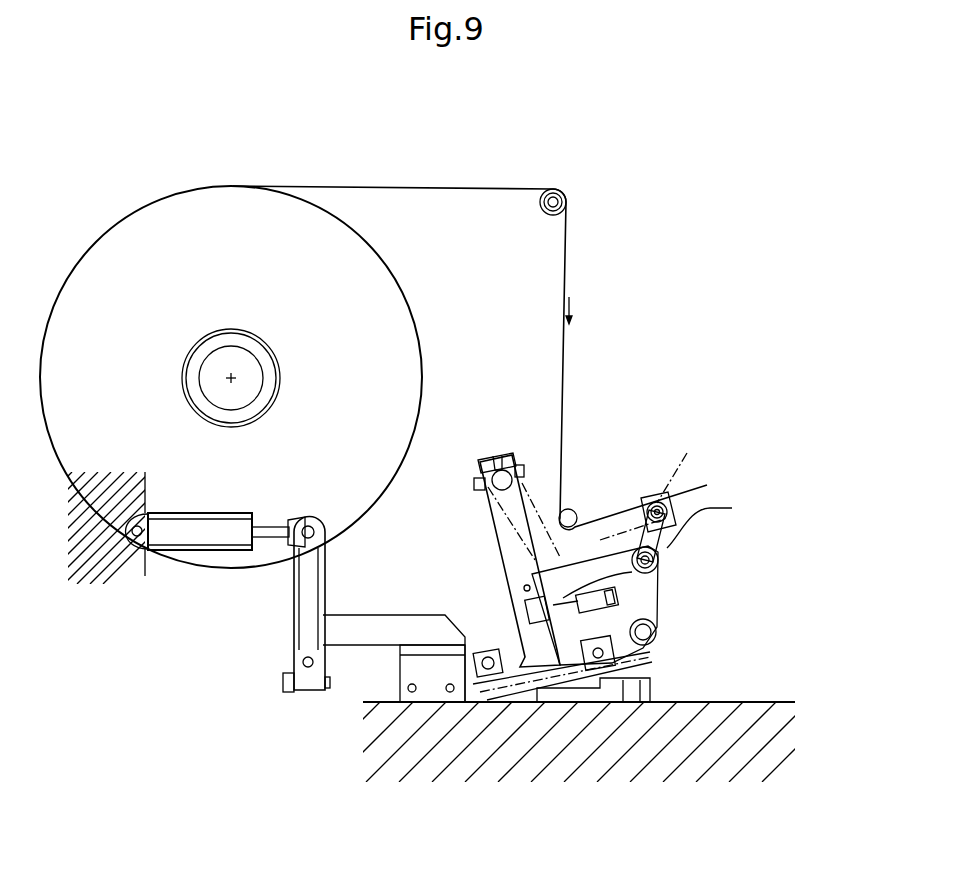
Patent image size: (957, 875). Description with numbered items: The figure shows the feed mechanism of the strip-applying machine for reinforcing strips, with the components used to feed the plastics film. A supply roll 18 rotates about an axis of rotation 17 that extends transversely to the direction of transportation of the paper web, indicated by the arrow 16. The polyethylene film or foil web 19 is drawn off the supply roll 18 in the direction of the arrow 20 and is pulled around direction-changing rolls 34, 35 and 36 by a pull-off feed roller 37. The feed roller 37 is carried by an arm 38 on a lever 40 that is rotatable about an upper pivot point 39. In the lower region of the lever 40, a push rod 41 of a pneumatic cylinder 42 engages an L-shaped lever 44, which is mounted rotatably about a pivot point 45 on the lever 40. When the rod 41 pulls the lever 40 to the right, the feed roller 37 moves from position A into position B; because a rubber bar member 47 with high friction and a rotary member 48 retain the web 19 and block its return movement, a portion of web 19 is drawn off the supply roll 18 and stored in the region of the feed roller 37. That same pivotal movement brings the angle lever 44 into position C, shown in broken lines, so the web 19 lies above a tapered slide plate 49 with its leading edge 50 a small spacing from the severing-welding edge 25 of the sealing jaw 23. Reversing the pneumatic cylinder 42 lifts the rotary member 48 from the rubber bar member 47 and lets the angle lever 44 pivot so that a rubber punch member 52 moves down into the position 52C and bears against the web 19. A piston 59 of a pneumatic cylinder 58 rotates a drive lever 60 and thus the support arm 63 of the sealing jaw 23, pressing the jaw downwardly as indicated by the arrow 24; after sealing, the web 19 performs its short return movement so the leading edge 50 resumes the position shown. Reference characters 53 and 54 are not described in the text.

The arrow 16 is at (744, 704).
The axis of rotation 17 is at (233, 377).
The supply roll 18 is at (393, 283).
The film or foil web 19 is at (566, 270).
The arrow 20 is at (574, 307).
The sealing jaw 23 is at (413, 703).
The double-headed arrow 24 is at (423, 660).
The severing-welding device 25 is at (443, 703).
The direction-changing roll 34 is at (567, 202).
The direction-changing roll 35 is at (573, 510).
The direction-changing roll 36 is at (656, 633).
The pull-off feed roller 37 is at (607, 518).
The arm 38 is at (622, 565).
The upper pivot point 39 is at (500, 470).
The lever 40 is at (500, 529).
The push rod 41 is at (653, 577).
The pneumatic cylinder 42 is at (617, 600).
The L-shaped lever 44 is at (530, 612).
The pivot point 45 is at (530, 643).
The rubber bar member 47 is at (622, 670).
The rotary member 48 is at (640, 675).
The slide plate 49 is at (648, 657).
The leading edge 50 is at (488, 690).
The rubber punch member 52 is at (500, 692).
The position of rubber punch member 52C is at (540, 690).
The pivot block 53 is at (600, 676).
The plate 54 is at (457, 636).
The pneumatic cylinder 58 is at (160, 537).
The piston 59 is at (260, 540).
The drive lever 60 is at (326, 550).
The support arm 63 is at (343, 645).
The position A is at (707, 521).
The position B is at (650, 485).
The position C is at (475, 640).